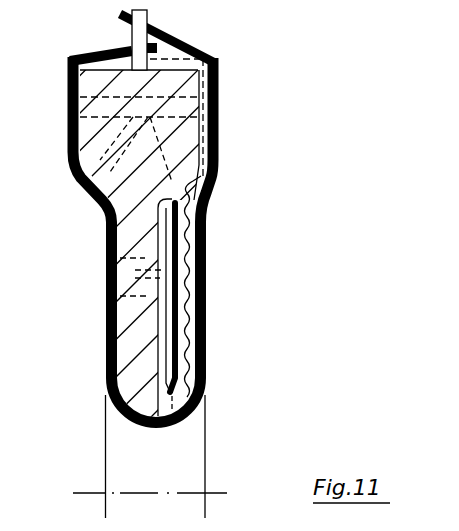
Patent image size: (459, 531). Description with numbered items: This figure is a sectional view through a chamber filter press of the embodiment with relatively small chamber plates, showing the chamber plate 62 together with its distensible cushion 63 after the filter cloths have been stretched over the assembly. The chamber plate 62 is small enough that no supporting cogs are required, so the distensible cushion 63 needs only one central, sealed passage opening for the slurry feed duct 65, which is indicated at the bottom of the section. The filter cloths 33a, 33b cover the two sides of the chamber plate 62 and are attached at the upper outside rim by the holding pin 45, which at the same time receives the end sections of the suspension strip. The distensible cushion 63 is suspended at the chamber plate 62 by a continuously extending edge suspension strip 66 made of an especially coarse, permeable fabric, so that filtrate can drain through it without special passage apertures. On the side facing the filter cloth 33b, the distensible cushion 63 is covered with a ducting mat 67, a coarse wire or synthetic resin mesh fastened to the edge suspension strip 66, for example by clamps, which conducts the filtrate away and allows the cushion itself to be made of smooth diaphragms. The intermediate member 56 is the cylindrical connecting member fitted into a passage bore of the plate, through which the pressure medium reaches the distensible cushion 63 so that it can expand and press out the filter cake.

The holding pin 45 is at (140, 36).
The edge suspension strip 66 is at (216, 125).
The chamber plate 62 is at (132, 228).
The filter cloth 33a is at (103, 241).
The filter cloth 33b is at (203, 258).
The intermediate member 56 is at (103, 298).
The distensible cushion 63 is at (180, 301).
The ducting mat 67 is at (190, 341).
The slurry feed duct 65 is at (127, 466).